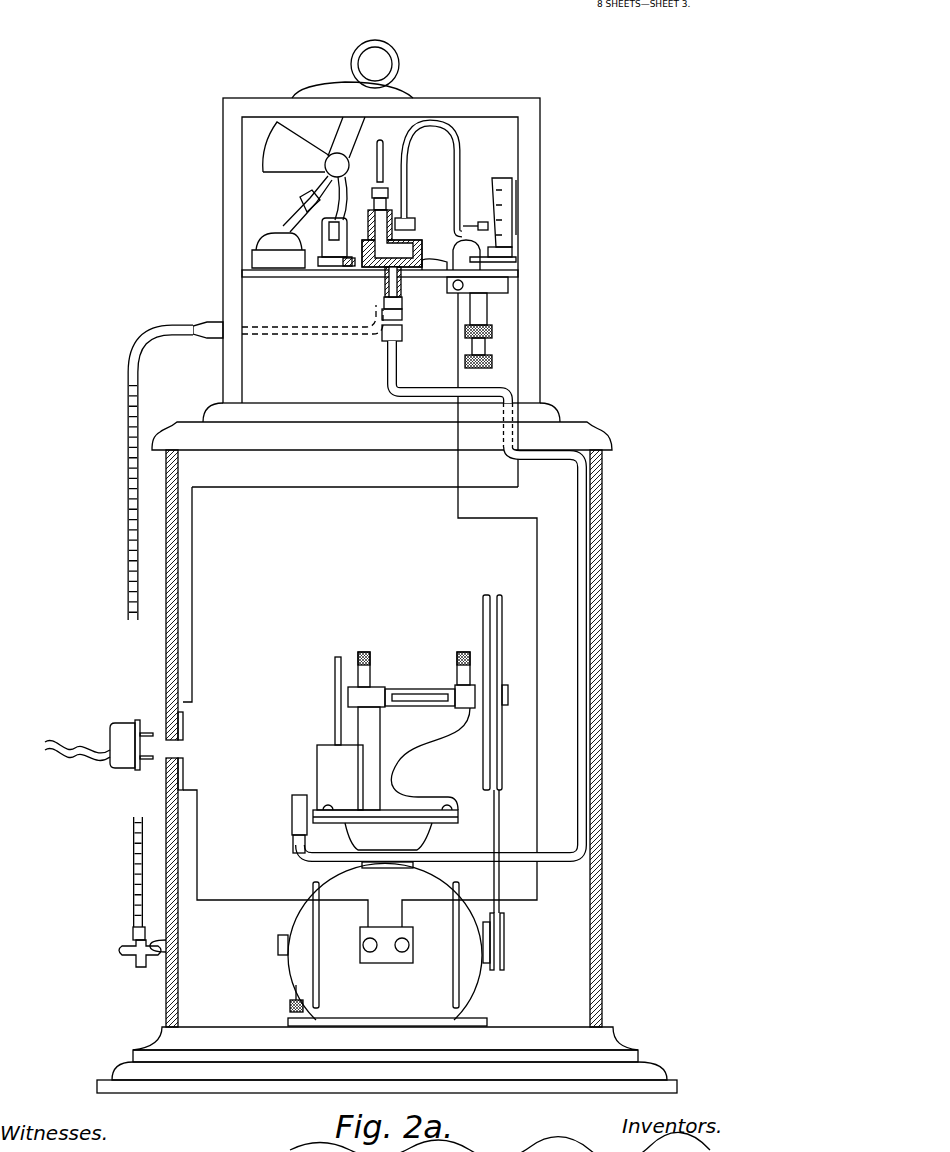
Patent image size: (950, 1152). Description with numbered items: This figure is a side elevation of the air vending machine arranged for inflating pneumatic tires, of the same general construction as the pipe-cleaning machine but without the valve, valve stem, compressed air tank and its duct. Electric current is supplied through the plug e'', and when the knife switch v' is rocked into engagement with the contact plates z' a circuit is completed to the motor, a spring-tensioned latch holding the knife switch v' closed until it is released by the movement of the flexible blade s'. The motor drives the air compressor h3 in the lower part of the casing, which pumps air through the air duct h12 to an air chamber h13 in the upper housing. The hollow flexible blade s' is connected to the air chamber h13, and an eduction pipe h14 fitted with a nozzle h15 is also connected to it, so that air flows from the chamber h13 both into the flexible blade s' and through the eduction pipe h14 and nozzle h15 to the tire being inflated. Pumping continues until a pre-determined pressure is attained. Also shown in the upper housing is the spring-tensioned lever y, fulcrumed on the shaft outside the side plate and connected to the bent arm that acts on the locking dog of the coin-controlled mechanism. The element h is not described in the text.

The burner tube h is at (381, 160).
The flexible blade s' is at (516, 128).
The lever y is at (343, 137).
The contact plates z' is at (557, 194).
The air chamber h13 is at (405, 255).
The knife switch v' is at (536, 245).
The eduction pipe h14 is at (130, 497).
The plug e'' is at (95, 719).
The air compressor h3 is at (378, 722).
The air duct h12 is at (582, 628).
The nozzle h15 is at (135, 960).